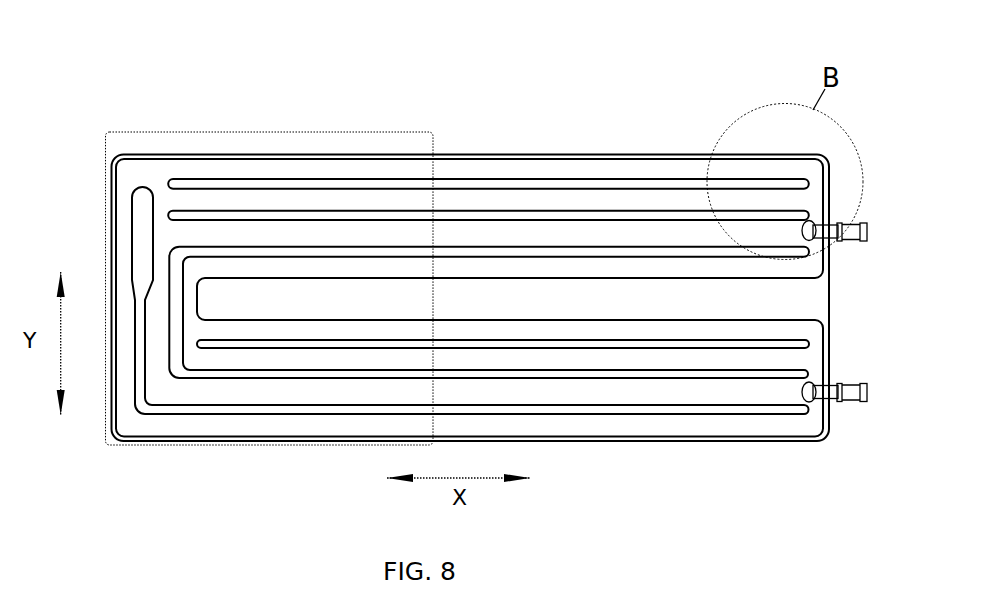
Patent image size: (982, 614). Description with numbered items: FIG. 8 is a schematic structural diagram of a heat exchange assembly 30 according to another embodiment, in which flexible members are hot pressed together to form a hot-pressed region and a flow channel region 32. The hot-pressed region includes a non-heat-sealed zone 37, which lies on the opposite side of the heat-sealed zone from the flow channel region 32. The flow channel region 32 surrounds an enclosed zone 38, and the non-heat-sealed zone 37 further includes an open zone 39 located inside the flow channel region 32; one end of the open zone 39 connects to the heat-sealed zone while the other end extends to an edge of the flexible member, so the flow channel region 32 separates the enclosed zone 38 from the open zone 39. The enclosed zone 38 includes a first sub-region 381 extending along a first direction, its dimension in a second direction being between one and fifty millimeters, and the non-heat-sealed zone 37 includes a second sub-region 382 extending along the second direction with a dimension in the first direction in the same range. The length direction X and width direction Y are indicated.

The heat exchange assembly 30 is at (170, 32).
The flow channel region 32 is at (396, 152).
The non-heat-sealed zone 37 is at (587, 72).
The enclosed zone 38 is at (617, 183).
The open zone 39 is at (522, 150).
The first sub-region 381 is at (725, 377).
The second sub-region 382 is at (133, 208).